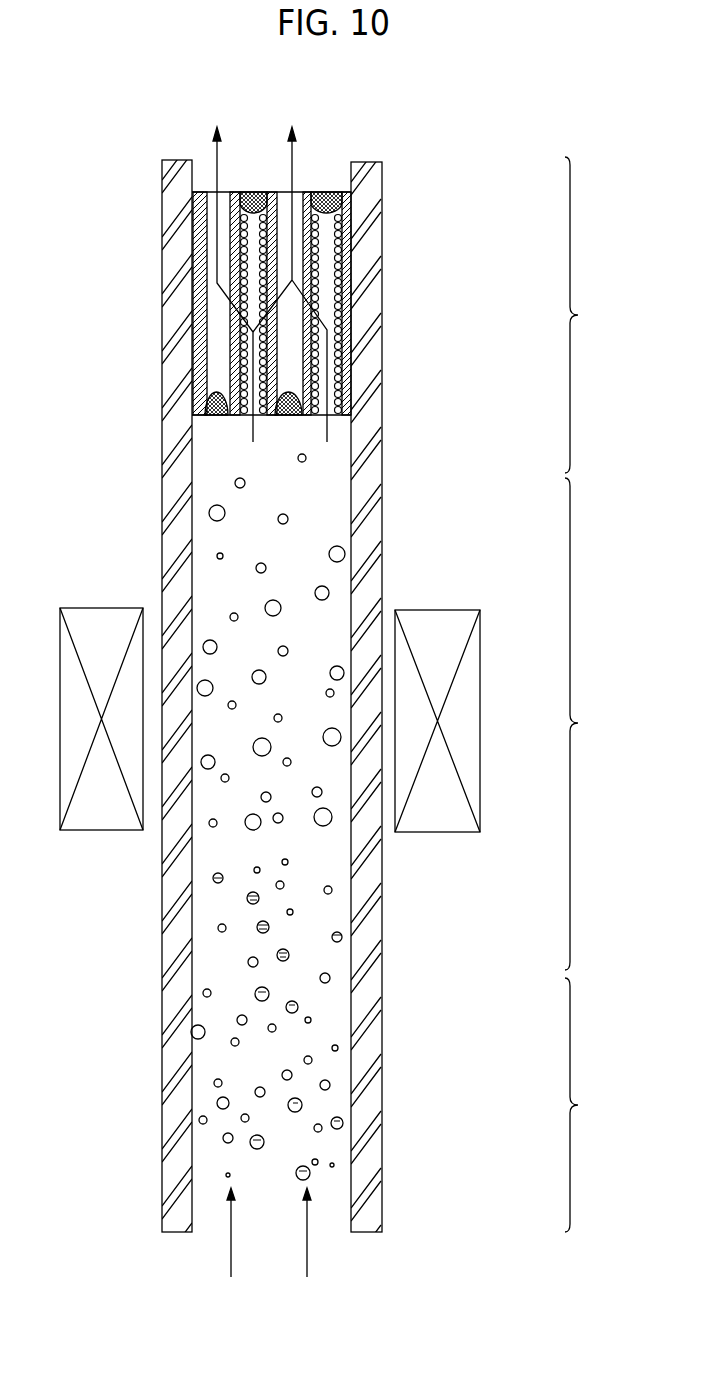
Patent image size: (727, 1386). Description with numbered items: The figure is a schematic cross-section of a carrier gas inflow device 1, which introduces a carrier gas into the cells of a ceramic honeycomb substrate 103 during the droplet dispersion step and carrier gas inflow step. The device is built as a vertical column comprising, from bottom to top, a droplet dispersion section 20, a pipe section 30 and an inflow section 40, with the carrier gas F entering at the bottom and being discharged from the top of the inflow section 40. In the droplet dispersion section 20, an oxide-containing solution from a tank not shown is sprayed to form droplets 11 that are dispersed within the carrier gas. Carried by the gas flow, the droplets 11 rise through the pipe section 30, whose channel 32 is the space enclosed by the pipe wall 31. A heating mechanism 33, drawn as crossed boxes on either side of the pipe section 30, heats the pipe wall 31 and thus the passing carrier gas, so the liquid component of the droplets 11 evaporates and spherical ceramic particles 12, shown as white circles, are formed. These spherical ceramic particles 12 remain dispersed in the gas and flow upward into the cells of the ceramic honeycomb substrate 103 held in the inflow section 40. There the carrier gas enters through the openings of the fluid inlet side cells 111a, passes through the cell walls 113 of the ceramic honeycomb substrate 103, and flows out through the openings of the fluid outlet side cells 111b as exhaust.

The carrier gas inflow device 1 is at (68, 170).
The droplets 11 is at (217, 1102).
The spherical ceramic particles 12 is at (205, 503).
The droplet dispersion section 20 is at (590, 1105).
The pipe section 30 is at (591, 724).
The pipe wall 31 is at (181, 966).
The channel 32 is at (267, 844).
The heating mechanism 33 is at (467, 717).
The inflow section 40 is at (591, 315).
The ceramic honeycomb substrate 103 is at (330, 177).
The fluid inlet side cells 111a is at (327, 442).
The fluid outlet side cells 111b is at (213, 197).
The cell walls 113 is at (238, 363).